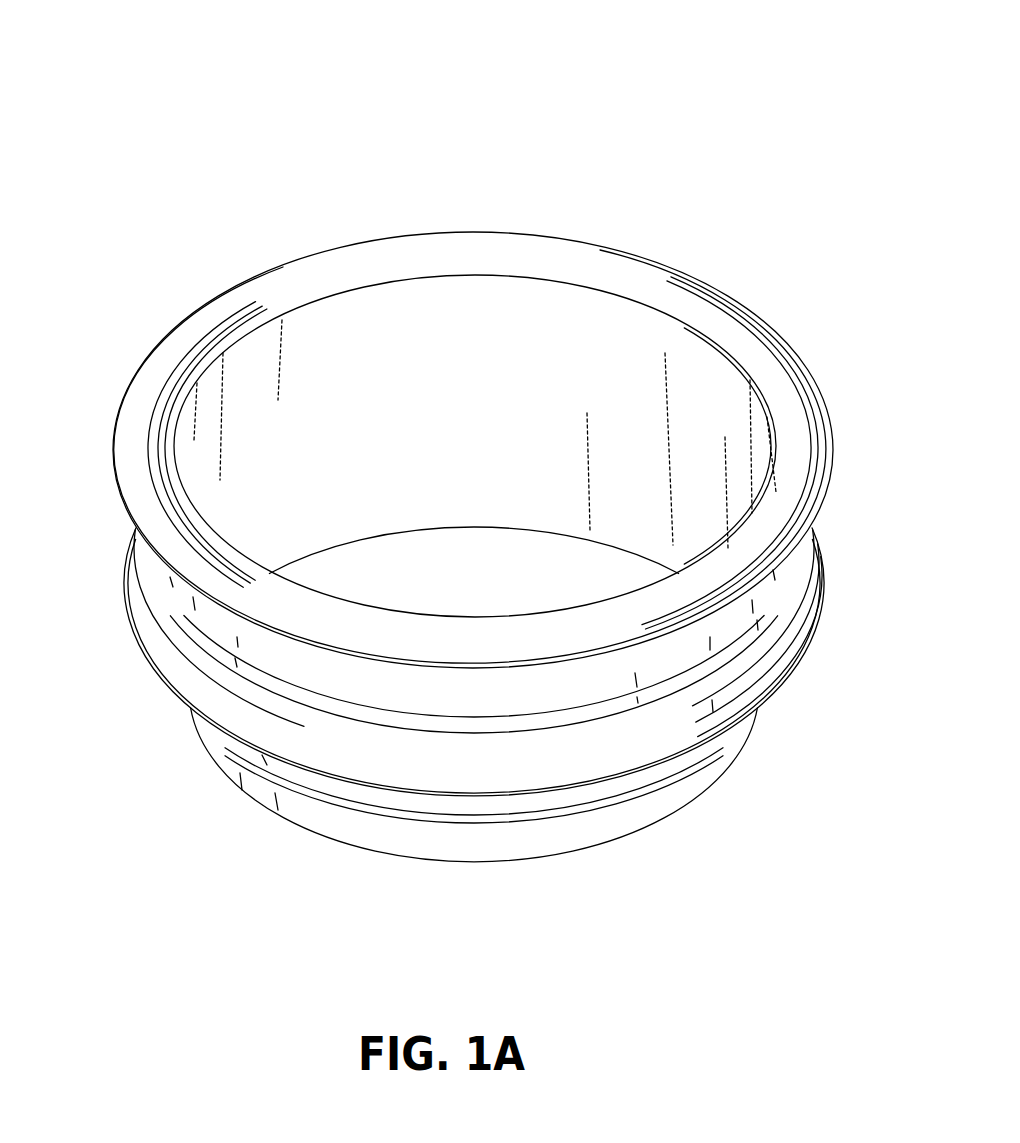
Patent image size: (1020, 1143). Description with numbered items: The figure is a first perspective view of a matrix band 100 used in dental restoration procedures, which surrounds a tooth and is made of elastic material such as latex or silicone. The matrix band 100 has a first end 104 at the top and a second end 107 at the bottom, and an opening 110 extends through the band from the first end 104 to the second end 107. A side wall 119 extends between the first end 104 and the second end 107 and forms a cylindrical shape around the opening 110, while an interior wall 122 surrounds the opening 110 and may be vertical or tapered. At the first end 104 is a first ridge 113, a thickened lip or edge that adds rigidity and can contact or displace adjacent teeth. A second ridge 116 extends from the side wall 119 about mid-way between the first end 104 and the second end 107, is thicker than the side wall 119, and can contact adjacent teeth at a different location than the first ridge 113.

The matrix band 100 is at (638, 66).
The first end 104 is at (600, 203).
The opening 110 is at (206, 307).
The first ridge 113 is at (802, 377).
The interior wall 122 is at (695, 350).
The second ridge 116 is at (822, 598).
The side wall 119 is at (170, 577).
The second end 107 is at (577, 887).